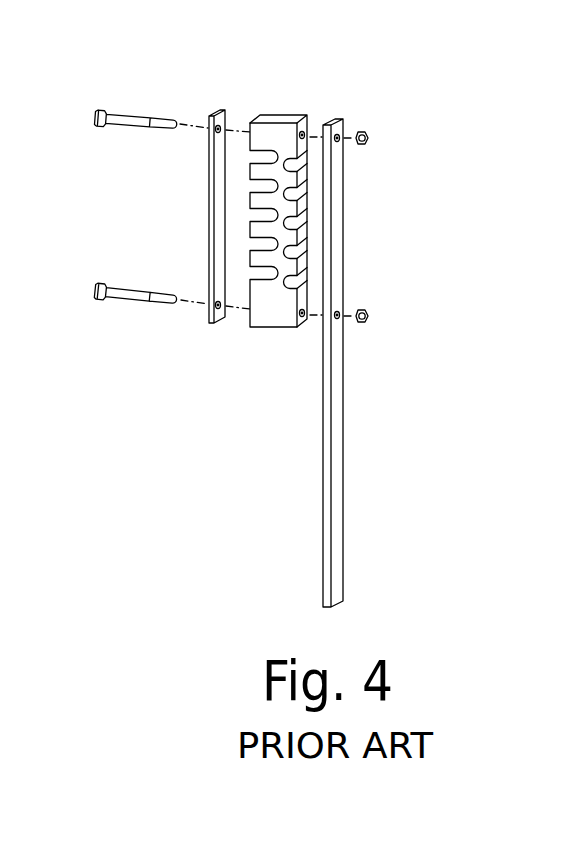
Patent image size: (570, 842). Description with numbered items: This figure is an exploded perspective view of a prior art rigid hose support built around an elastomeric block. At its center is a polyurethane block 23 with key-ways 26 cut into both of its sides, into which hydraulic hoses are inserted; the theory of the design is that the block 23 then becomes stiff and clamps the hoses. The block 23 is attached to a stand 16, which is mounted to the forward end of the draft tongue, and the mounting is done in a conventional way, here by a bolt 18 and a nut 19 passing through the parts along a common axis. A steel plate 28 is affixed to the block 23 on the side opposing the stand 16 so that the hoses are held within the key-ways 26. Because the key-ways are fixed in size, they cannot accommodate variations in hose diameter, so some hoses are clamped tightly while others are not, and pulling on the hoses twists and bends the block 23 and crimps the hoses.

The stand 16 is at (323, 515).
The bolt 18 is at (133, 114).
The nut 19 is at (369, 139).
The polyurethane block 23 is at (280, 328).
The key-ways 26 is at (314, 250).
The steel plate 28 is at (209, 192).